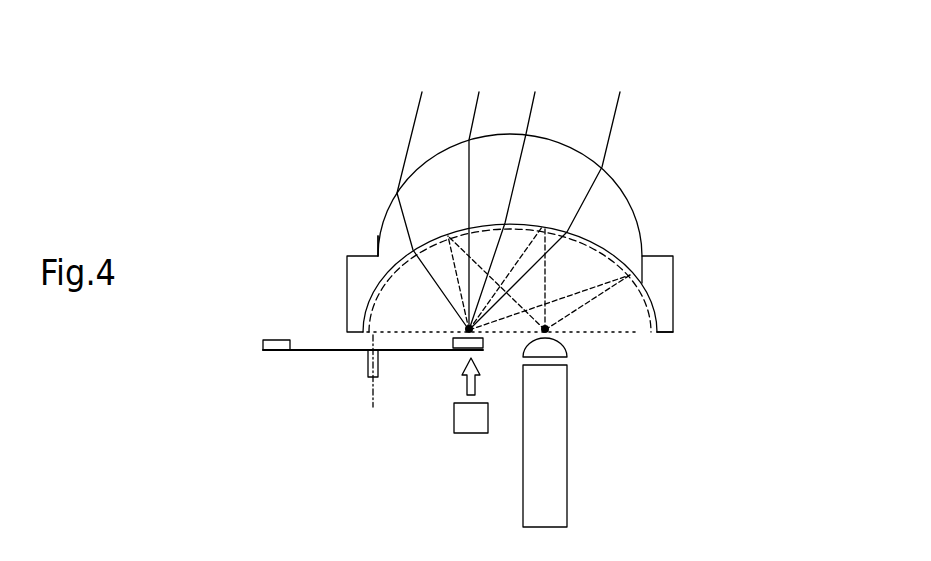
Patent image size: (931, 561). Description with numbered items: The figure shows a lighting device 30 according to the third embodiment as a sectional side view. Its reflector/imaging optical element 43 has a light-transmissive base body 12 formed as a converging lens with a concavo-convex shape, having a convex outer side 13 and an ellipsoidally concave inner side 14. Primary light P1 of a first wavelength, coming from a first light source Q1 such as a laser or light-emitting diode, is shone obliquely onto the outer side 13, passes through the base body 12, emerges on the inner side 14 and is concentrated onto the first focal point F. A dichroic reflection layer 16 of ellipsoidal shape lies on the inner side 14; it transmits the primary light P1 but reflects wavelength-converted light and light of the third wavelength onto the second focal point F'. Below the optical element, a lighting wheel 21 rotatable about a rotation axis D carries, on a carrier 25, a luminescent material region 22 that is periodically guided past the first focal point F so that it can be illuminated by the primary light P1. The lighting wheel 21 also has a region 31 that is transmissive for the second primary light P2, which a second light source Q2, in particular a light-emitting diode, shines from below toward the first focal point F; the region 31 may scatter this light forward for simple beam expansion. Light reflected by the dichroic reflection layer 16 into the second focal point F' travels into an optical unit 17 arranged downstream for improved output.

The lighting device 30 is at (698, 126).
The base body 12 is at (347, 275).
The outer side 13 is at (628, 197).
The inner side 14 is at (610, 259).
The dichroic reflection layer 16 is at (657, 333).
The optical unit 17 is at (583, 337).
The lighting wheel 21 is at (318, 382).
The luminescent material region 22 is at (365, 315).
The region 31 is at (275, 338).
The carrier 25 is at (307, 351).
The reflector/imaging optical element 43 is at (378, 236).
The rotation axis D is at (365, 372).
The first focal point F is at (446, 317).
The second focal point F' is at (578, 317).
The primary light P1 is at (534, 109).
The second primary light P2 is at (465, 378).
The first light source Q1 is at (508, 194).
The second light source Q2 is at (475, 418).